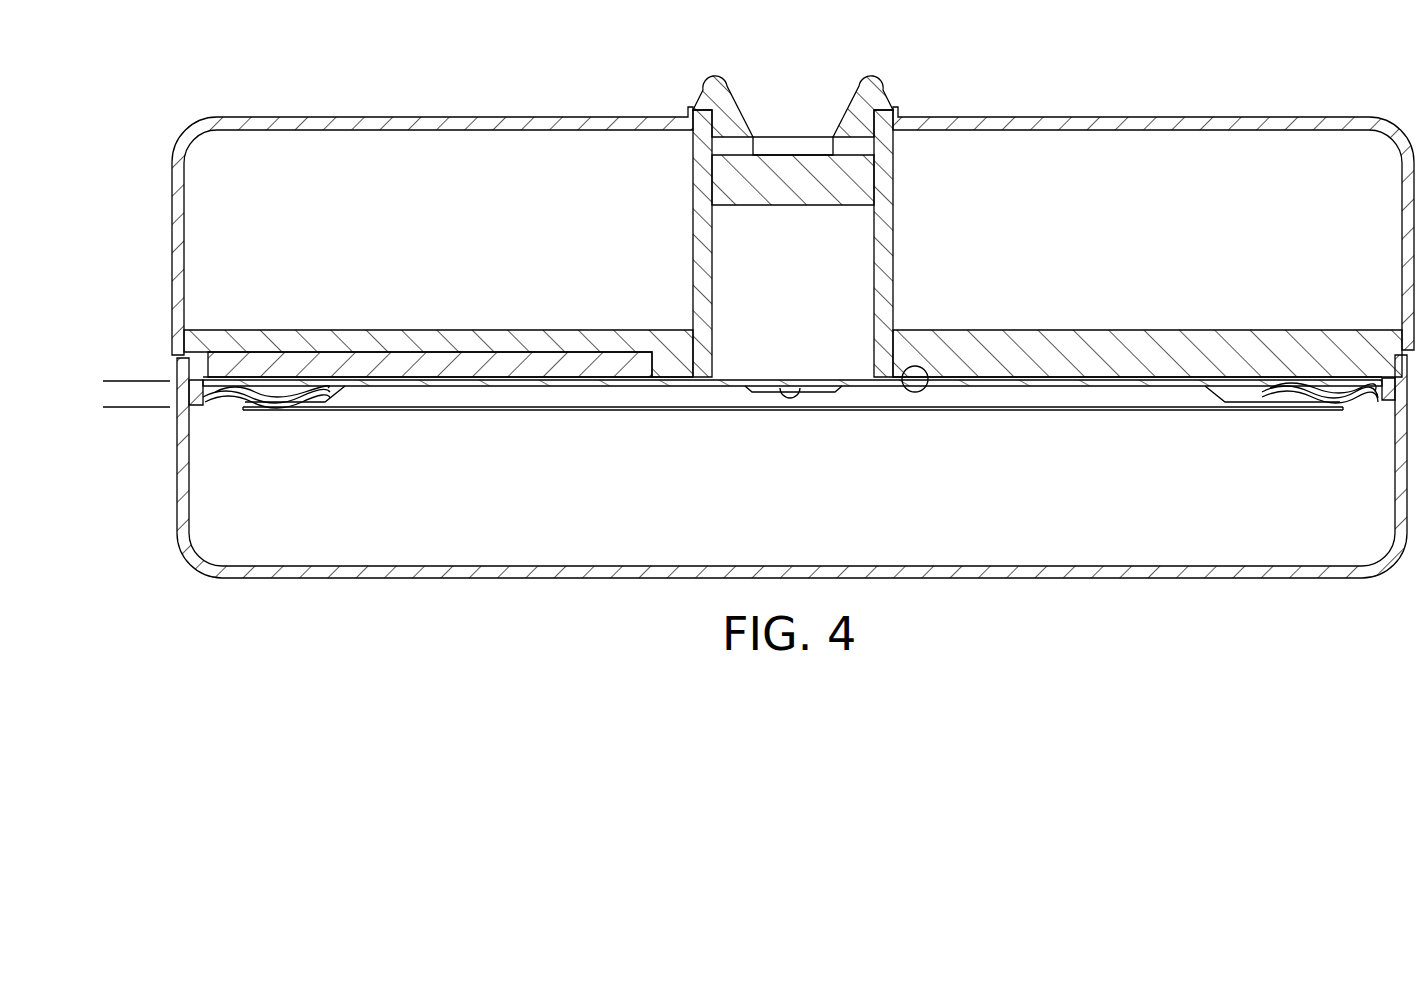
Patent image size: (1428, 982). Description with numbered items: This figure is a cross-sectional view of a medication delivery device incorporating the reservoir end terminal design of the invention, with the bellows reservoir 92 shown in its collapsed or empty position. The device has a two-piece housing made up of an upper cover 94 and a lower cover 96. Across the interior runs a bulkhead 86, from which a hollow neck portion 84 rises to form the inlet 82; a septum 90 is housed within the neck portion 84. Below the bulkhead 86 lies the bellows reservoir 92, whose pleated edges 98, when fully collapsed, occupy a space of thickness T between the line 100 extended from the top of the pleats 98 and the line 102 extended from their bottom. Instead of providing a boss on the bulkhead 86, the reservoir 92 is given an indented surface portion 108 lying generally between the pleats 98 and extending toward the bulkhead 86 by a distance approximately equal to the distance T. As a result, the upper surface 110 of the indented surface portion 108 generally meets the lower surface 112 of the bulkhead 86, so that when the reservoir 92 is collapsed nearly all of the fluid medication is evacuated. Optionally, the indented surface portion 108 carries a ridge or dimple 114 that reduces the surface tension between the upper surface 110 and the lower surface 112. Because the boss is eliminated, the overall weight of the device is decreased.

The inlet 82 is at (805, 135).
The hollow neck portion 84 is at (692, 225).
The bulkhead 86 is at (1015, 345).
The septum 90 is at (766, 165).
The bellows reservoir 92 is at (1100, 388).
The upper cover 94 is at (1385, 118).
The lower cover 96 is at (1388, 565).
The pleated edges 98 is at (226, 404).
The line 100 is at (130, 380).
The line 102 is at (140, 407).
The indented surface portion 108 is at (493, 392).
The upper surface 110 is at (903, 388).
The lower surface 112 is at (1000, 388).
The ridge or dimple 114 is at (762, 388).
The distance T is at (127, 397).